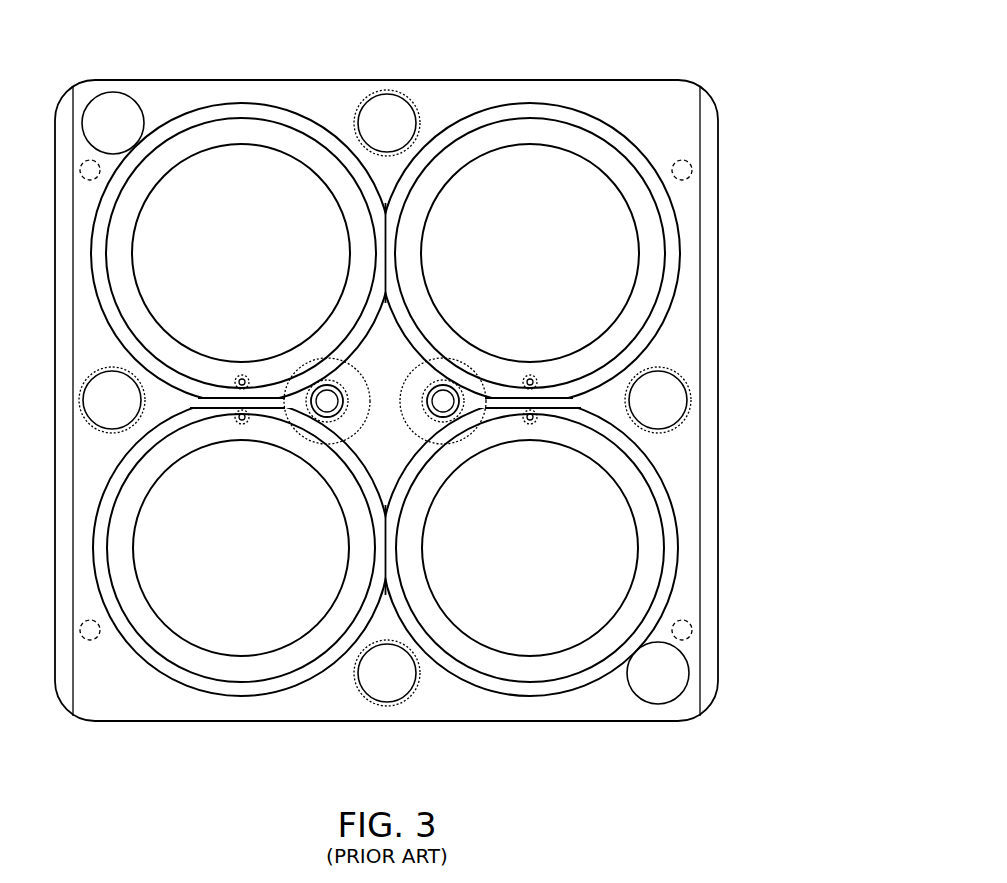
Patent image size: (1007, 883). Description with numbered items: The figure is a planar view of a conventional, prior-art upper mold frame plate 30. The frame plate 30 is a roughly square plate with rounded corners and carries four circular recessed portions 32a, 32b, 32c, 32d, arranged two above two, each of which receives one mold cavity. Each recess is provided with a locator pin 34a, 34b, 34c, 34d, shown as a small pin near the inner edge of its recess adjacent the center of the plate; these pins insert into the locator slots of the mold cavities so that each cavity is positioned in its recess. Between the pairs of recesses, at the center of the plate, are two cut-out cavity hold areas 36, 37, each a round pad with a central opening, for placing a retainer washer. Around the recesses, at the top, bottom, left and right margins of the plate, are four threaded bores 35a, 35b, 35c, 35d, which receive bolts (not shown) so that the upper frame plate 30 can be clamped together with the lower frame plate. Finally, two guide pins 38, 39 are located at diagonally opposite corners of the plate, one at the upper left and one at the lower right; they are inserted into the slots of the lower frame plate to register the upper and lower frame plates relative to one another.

The upper mold frame plate 30 is at (645, 60).
The circular recessed portion 32a is at (541, 254).
The circular recessed portion 32b is at (541, 556).
The circular recessed portion 32c is at (153, 542).
The circular recessed portion 32d is at (153, 266).
The locator pin 34a is at (530, 375).
The locator pin 34b is at (530, 424).
The locator pin 34c is at (242, 424).
The locator pin 34d is at (242, 375).
The threaded bore 35a is at (370, 135).
The threaded bore 35b is at (641, 412).
The threaded bore 35c is at (370, 685).
The threaded bore 35d is at (95, 412).
The cut-out cavity hold area 36 is at (462, 420).
The cut-out cavity hold area 37 is at (331, 372).
The guide pin 38 is at (646, 684).
The guide pin 39 is at (101, 134).